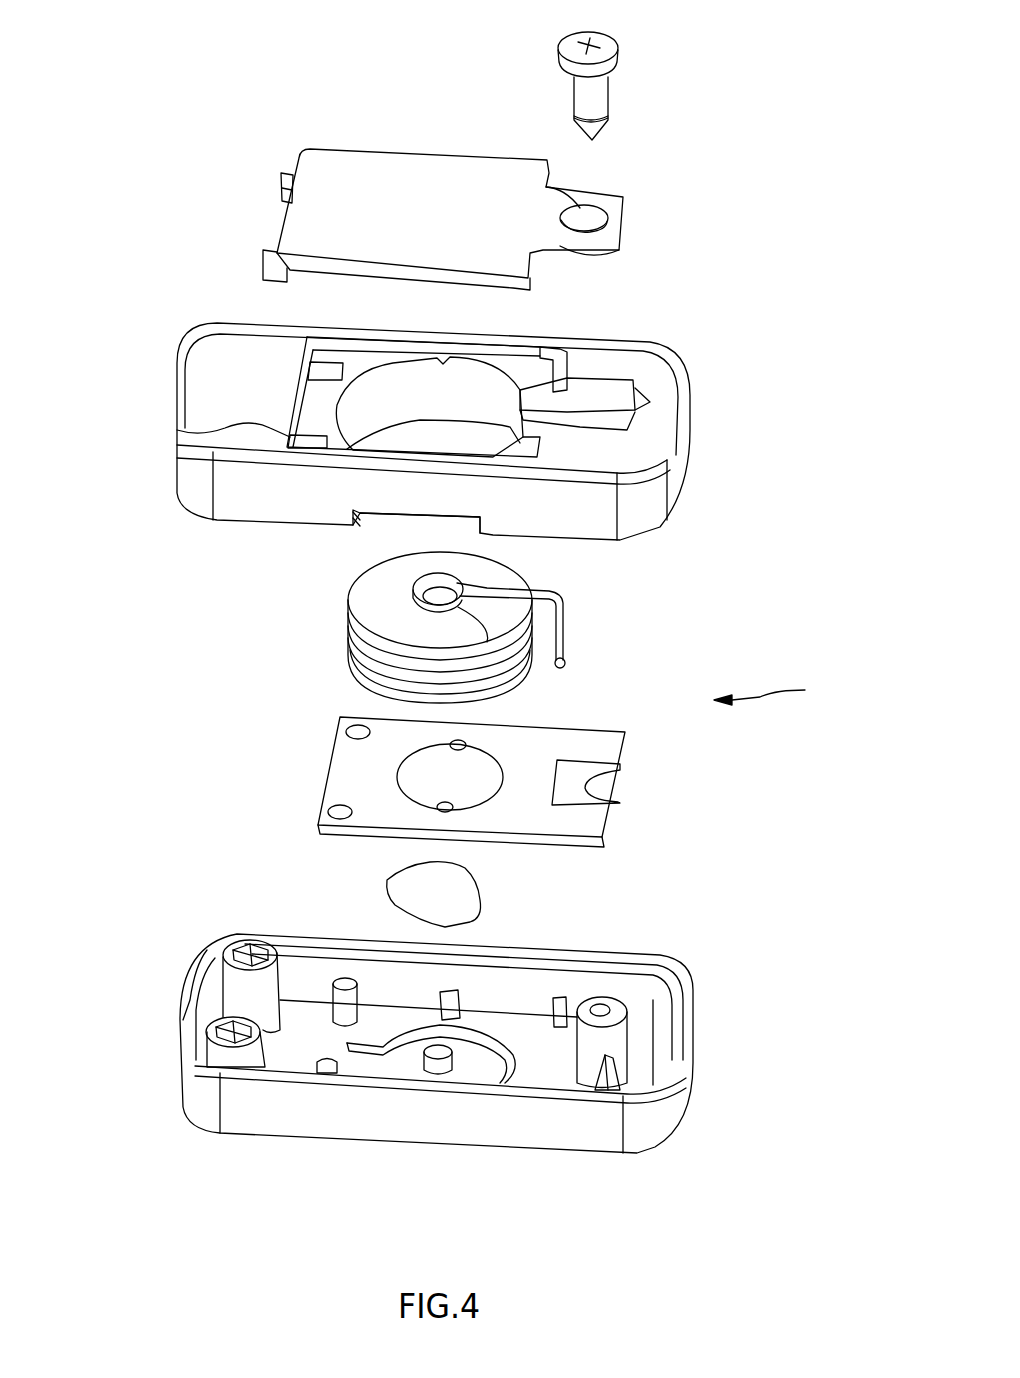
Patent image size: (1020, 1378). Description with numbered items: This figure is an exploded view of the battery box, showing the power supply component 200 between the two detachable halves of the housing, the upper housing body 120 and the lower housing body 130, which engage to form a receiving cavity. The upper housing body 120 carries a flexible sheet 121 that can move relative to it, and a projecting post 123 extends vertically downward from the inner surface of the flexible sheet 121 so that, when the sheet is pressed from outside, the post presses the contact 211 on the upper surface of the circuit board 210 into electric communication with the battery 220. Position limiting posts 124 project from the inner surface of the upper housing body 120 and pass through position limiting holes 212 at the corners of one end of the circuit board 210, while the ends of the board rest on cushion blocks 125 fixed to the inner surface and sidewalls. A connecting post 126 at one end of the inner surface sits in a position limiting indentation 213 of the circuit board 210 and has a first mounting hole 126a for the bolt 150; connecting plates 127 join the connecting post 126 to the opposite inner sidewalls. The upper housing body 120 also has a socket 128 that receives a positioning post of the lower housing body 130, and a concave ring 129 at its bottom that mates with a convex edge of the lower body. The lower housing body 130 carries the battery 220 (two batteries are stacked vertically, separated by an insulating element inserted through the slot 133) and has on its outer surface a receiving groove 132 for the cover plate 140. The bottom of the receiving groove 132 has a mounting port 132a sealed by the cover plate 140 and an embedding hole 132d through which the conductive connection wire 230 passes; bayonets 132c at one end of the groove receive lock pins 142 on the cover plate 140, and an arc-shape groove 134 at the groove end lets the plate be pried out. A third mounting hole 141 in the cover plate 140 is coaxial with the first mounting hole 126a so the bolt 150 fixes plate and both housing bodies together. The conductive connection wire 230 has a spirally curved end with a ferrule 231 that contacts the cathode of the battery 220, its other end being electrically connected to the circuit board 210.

The upper housing body 120 is at (297, 1120).
The flexible sheet 121 is at (480, 1073).
The projecting post 123 is at (432, 1055).
The position limiting post 124 is at (343, 997).
The cushion block 125 is at (460, 992).
The connecting post 126 is at (613, 1037).
The first mounting hole 126a is at (603, 1010).
The connecting plate 127 is at (617, 1077).
The socket 128 is at (227, 947).
The concave ring 129 is at (207, 1022).
The lower housing body 130 is at (627, 362).
The receiving groove 132 is at (530, 368).
The mounting port 132a is at (305, 325).
The bayonet 132c is at (290, 435).
The embedding hole 132d is at (500, 412).
The slot 133 is at (365, 515).
The arc-shape groove 134 is at (650, 407).
The cover plate 140 is at (355, 178).
The third mounting hole 141 is at (587, 218).
The lock pin 142 is at (285, 182).
The bolt 150 is at (587, 95).
The power supply component 200 is at (782, 691).
The circuit board 210 is at (357, 763).
The contact 211 is at (462, 880).
The position limiting hole 212 is at (340, 812).
The position limiting indentation 213 is at (600, 790).
The battery 220 is at (377, 628).
The conductive connection wire 230 is at (565, 640).
The ferrule 231 is at (487, 642).